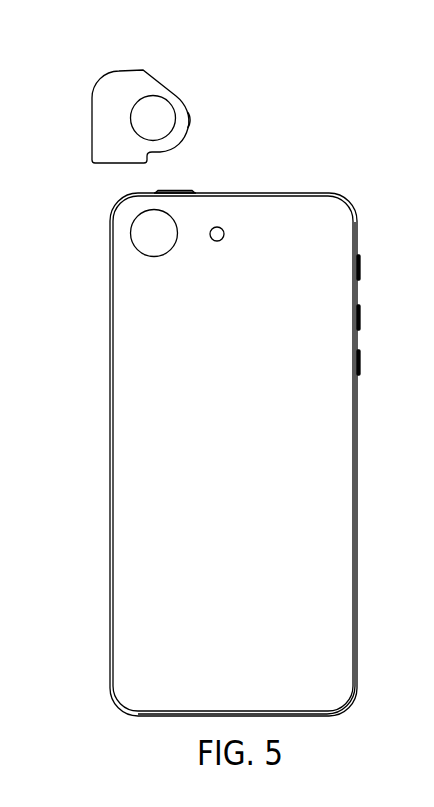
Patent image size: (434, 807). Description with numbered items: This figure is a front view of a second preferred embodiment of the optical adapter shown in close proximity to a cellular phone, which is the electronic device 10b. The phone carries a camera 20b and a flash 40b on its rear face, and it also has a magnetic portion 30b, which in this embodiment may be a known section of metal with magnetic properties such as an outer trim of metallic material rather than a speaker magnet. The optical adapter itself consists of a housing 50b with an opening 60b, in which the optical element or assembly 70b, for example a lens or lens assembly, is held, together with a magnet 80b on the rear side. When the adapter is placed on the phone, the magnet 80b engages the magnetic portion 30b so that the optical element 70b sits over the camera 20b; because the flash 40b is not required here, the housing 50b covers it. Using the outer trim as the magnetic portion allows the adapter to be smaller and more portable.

The electronic device 10b is at (335, 469).
The camera 20b is at (130, 233).
The magnetic portion 30b is at (285, 237).
The flash 40b is at (217, 227).
The housing 50b is at (92, 133).
The opening 60b is at (137, 100).
The optical element or assembly 70b is at (158, 117).
The magnet 80b is at (112, 115).